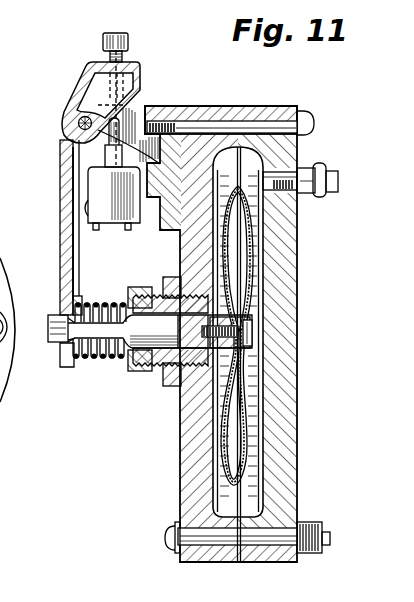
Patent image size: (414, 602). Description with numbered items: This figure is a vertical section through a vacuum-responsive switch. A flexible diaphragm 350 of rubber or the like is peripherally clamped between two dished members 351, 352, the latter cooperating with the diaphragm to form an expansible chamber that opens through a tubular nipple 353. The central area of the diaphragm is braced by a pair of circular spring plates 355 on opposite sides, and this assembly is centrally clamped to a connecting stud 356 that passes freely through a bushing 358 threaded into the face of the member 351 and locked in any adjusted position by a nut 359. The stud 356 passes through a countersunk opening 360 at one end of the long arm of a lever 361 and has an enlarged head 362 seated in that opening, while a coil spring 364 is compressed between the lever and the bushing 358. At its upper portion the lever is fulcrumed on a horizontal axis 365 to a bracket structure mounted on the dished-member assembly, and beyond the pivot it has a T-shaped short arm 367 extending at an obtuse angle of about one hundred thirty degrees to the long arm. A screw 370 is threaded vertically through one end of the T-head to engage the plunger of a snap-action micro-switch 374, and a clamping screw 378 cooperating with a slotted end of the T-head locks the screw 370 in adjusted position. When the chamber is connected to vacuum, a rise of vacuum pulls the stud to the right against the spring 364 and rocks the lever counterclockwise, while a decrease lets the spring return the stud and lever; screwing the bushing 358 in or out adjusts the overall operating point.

The flexible diaphragm 350 is at (240, 497).
The dished member 351 is at (229, 85).
The dished member 352 is at (283, 383).
The tubular nipple 353 is at (305, 195).
The circular spring plates 355 is at (240, 426).
The connecting stud 356 is at (163, 382).
The bushing 358 is at (126, 376).
The nut 359 is at (171, 280).
The countersunk opening 360 is at (66, 368).
The lever 361 is at (62, 262).
The enlarged head 362 is at (48, 338).
The coil spring 364 is at (97, 304).
The horizontal axis 365 is at (66, 118).
The T-shaped short arm 367 is at (69, 95).
The screw 370 is at (129, 40).
The snap-action micro-switch 374 is at (96, 188).
The clamping screw 378 is at (87, 66).